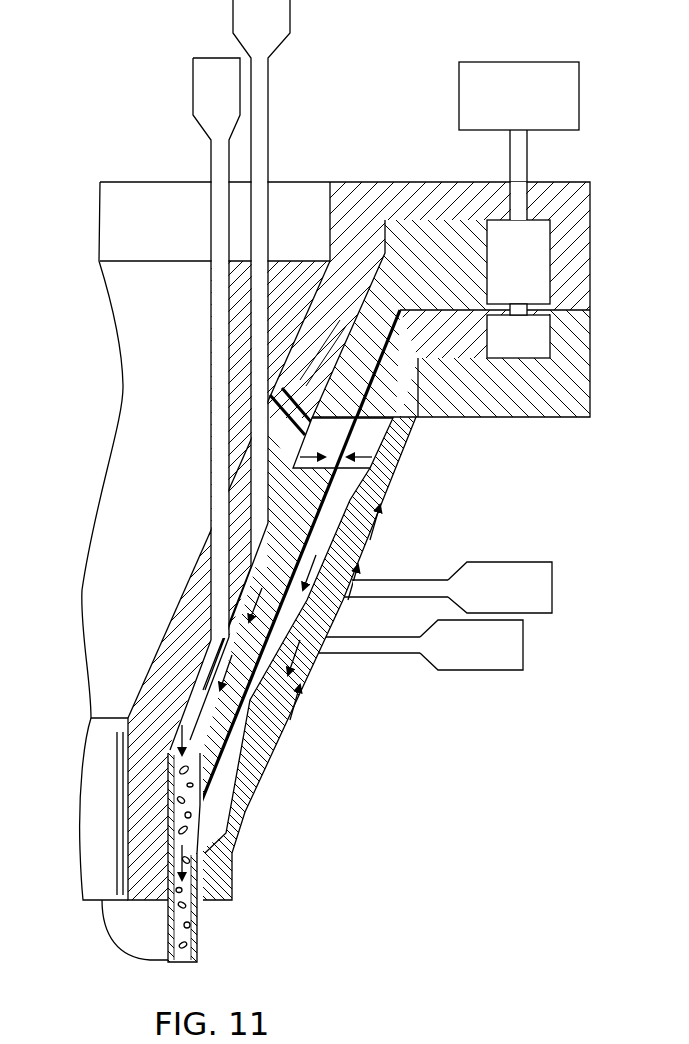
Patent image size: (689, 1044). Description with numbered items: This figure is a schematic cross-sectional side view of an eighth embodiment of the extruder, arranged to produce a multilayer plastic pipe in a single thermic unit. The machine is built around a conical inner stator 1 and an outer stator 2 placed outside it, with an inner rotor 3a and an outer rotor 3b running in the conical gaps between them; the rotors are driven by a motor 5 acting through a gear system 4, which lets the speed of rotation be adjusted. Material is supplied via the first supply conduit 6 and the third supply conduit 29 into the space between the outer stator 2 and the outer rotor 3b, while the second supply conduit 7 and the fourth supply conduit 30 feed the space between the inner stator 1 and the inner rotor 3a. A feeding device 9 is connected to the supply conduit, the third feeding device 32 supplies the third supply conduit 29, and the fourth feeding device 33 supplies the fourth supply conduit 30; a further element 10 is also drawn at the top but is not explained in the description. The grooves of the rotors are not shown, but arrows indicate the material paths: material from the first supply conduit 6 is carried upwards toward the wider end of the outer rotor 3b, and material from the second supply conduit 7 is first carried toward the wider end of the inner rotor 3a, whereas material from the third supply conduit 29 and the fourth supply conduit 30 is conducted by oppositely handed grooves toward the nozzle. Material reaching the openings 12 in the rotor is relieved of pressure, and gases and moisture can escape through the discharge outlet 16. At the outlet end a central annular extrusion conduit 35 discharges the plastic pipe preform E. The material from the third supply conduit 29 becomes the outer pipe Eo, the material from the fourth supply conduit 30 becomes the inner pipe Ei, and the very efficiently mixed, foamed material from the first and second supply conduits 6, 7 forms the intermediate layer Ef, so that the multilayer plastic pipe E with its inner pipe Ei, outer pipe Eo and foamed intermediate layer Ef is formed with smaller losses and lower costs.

The inner stator 1 is at (185, 625).
The outer stator 2 is at (365, 496).
The inner rotor 3a is at (248, 597).
The outer rotor 3b is at (318, 552).
The gear system 4 is at (527, 258).
The motor 5 is at (525, 85).
The first supply conduit 6 is at (415, 587).
The second supply conduit 7 is at (257, 317).
The feeding device 9 is at (490, 587).
The inlet tube 10 is at (262, 20).
The openings 12 is at (330, 445).
The discharge outlet 16 is at (303, 417).
The third supply conduit 29 is at (345, 655).
The fourth supply conduit 30 is at (217, 357).
The third feeding device 32 is at (460, 647).
The fourth feeding device 33 is at (214, 103).
The central annular extrusion conduit 35 is at (193, 880).
The outer pipe Eo is at (197, 926).
The intermediate layer Ef is at (198, 950).
The inner pipe Ei is at (168, 914).
The plastic pipe preform E is at (118, 977).